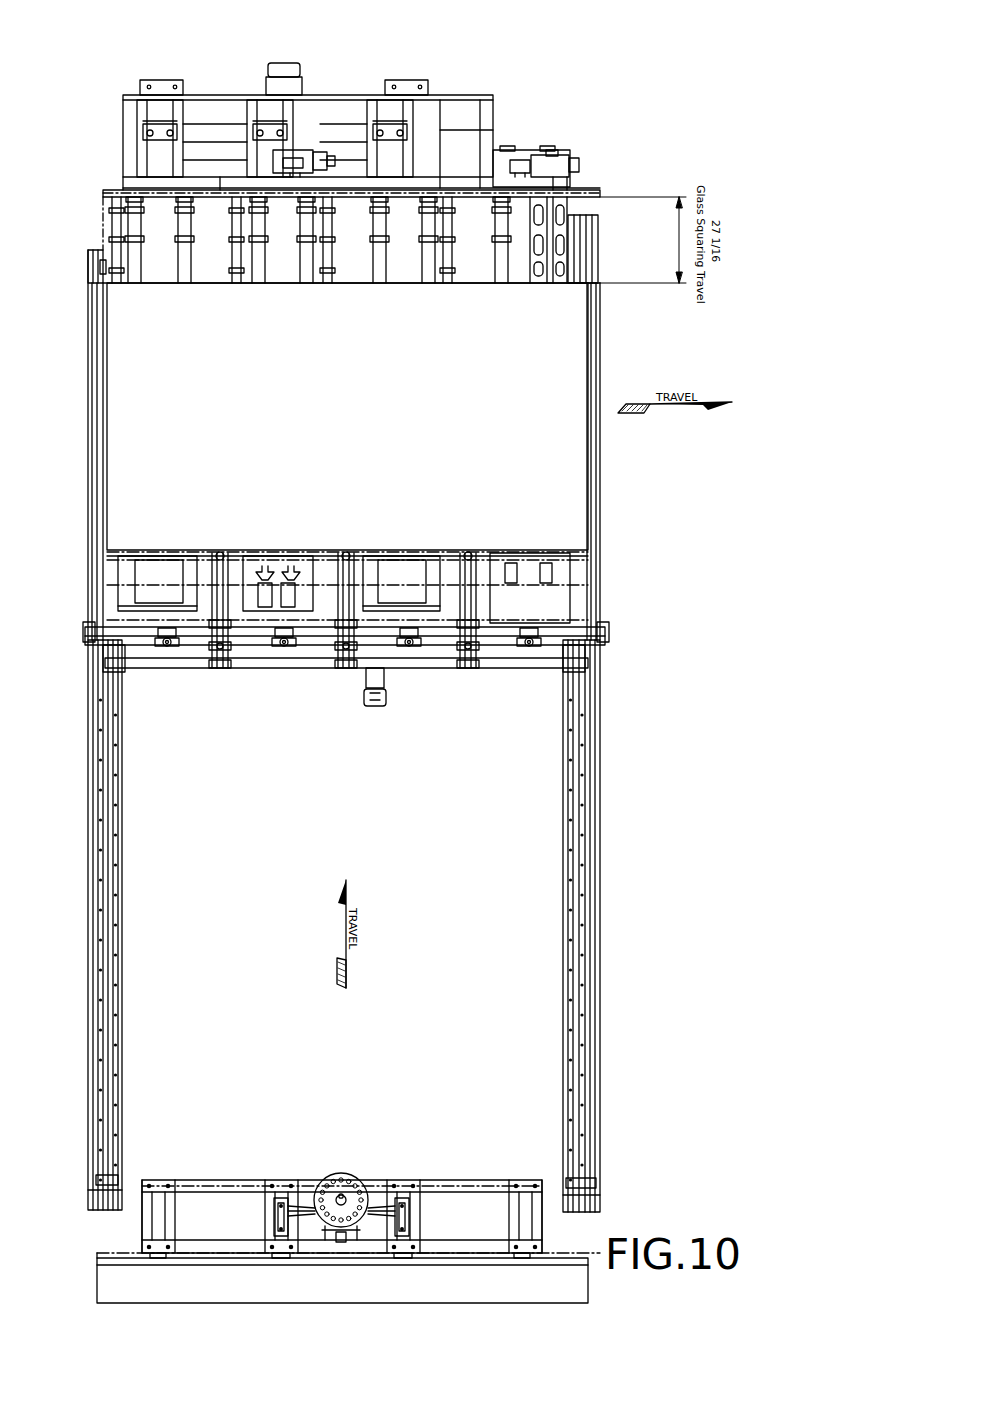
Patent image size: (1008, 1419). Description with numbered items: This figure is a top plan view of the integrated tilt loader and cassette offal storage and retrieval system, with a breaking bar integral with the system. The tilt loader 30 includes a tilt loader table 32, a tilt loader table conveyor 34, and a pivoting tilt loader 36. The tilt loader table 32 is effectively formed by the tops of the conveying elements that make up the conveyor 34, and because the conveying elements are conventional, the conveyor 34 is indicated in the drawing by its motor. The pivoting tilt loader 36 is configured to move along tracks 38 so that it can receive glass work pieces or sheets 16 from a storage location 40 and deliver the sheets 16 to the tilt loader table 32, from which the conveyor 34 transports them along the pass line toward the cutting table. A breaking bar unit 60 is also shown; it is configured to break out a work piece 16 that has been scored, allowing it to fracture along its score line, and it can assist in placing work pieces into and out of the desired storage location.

The tilt loader 30 is at (462, 95).
The tilt loader table conveyor 34 is at (233, 160).
The breaking bar unit 60 is at (575, 176).
The tilt loader table 32 is at (172, 265).
The glass work piece 16 is at (344, 389).
The pivoting tilt loader 36 is at (197, 650).
The tracks 38 is at (110, 1070).
The storage location 40 is at (222, 1303).